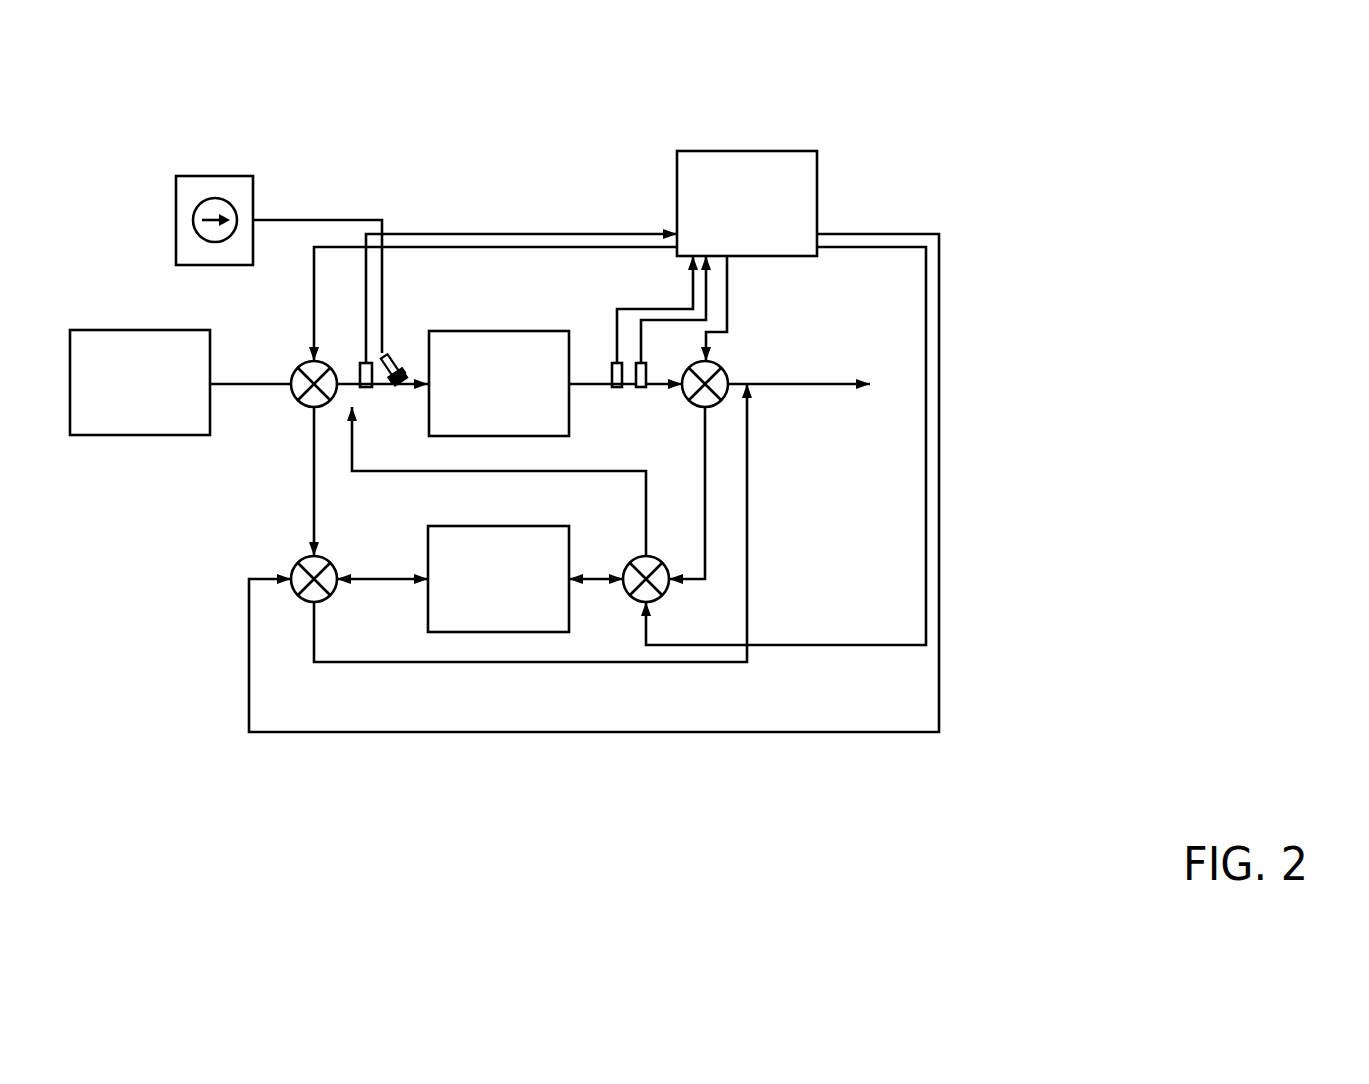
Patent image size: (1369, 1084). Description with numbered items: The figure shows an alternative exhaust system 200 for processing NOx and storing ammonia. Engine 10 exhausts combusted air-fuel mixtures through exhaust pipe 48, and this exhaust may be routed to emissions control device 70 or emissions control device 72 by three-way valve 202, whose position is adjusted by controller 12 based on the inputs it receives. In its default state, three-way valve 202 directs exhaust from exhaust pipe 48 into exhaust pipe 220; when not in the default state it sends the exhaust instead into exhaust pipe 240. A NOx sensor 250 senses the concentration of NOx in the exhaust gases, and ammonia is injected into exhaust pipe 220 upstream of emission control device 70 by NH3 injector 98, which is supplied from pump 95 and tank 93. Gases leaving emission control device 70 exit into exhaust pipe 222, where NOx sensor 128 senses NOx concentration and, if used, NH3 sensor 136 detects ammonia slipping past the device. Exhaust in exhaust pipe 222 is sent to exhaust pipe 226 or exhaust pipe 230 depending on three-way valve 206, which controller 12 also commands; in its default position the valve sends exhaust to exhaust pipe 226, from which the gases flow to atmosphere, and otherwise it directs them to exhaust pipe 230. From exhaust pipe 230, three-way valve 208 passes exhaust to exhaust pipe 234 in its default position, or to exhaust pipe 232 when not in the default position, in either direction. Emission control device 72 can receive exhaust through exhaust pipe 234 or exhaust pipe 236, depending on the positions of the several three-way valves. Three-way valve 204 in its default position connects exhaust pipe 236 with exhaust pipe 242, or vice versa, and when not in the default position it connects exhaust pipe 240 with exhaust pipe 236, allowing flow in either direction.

The alternative exhaust system 200 is at (1156, 44).
The engine 10 is at (127, 395).
The controller 12 is at (734, 215).
The emissions control device 70 is at (486, 395).
The emissions control device 72 is at (486, 590).
The tank 93 is at (228, 265).
The pump 95 is at (215, 198).
The exhaust pipe 48 is at (244, 383).
The three-way valve 202 is at (300, 366).
The NOx sensor 250 is at (358, 363).
The exhaust pipe 220 is at (368, 390).
The NH3 injector 98 is at (396, 360).
The exhaust pipe 240 is at (310, 444).
The three-way valve 204 is at (328, 561).
The exhaust pipe 232 is at (428, 472).
The exhaust pipe 236 is at (388, 582).
The exhaust pipe 242 is at (470, 663).
The exhaust pipe 222 is at (580, 383).
The NH3 sensor 136 is at (608, 386).
The NOx sensor 128 is at (647, 362).
The three-way valve 206 is at (719, 365).
The exhaust pipe 226 is at (802, 383).
The exhaust pipe 230 is at (704, 495).
The three-way valve 208 is at (632, 560).
The exhaust pipe 234 is at (598, 582).